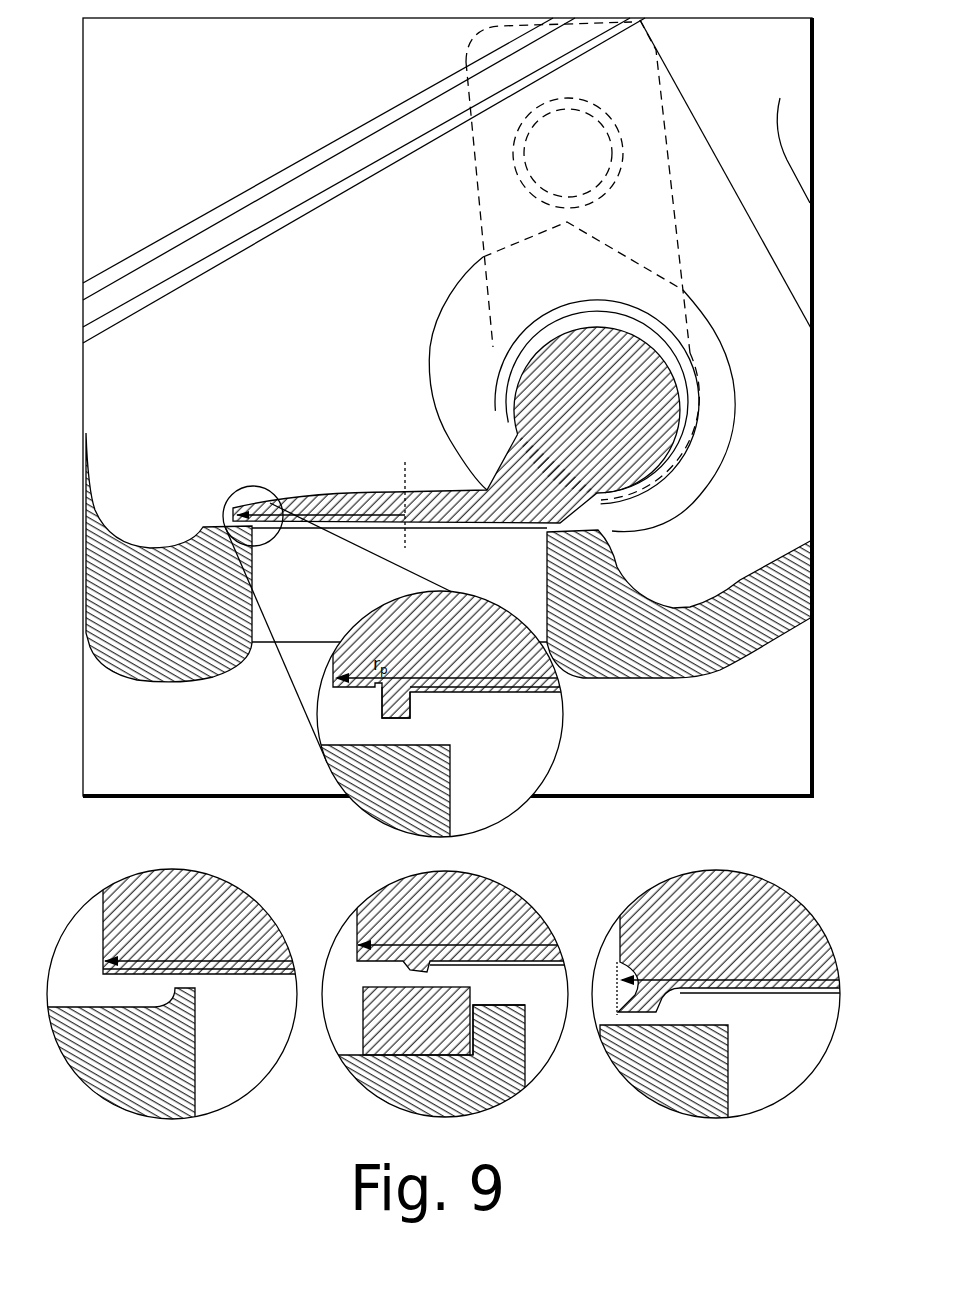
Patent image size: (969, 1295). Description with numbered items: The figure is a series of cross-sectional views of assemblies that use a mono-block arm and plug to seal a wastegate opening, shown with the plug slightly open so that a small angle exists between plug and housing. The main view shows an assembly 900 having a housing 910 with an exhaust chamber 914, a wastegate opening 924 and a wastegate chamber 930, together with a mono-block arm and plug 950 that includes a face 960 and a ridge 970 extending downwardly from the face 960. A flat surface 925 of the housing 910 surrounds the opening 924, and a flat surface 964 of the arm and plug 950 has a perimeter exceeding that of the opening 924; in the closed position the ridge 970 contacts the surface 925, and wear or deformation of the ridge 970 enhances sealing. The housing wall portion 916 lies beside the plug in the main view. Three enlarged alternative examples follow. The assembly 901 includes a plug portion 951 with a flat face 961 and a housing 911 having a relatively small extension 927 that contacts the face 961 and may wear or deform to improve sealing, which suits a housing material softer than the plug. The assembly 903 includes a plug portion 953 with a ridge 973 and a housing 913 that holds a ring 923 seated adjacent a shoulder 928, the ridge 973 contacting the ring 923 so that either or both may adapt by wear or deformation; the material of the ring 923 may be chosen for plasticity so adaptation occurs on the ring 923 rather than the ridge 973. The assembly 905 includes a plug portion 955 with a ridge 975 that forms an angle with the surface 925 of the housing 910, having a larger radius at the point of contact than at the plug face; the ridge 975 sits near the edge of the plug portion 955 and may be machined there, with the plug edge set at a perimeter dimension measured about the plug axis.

The assembly 900 is at (158, 76).
The wastegate chamber 930 is at (246, 338).
The mono-block arm and plug 950 is at (348, 493).
The face 960 is at (428, 527).
The flat surface 925 is at (227, 514).
The wastegate opening 924 is at (248, 527).
The side wall 916 is at (252, 643).
The housing 910 is at (631, 651).
The exhaust chamber 914 is at (653, 739).
The flat surface 964 is at (374, 694).
The ridge 970 is at (408, 702).
The assembly 901 is at (170, 991).
The assembly 903 is at (448, 990).
The assembly 905 is at (718, 990).
The plug portion 951 is at (203, 916).
The flat face 961 is at (220, 975).
The extension 927 is at (178, 988).
The housing 911 is at (161, 1067).
The plug portion 953 is at (468, 916).
The ridge 973 is at (410, 970).
The ring 923 is at (438, 1034).
The shoulder 928 is at (493, 1005).
The housing 913 is at (466, 1099).
The plug portion 955 is at (736, 916).
The ridge 975 is at (663, 997).